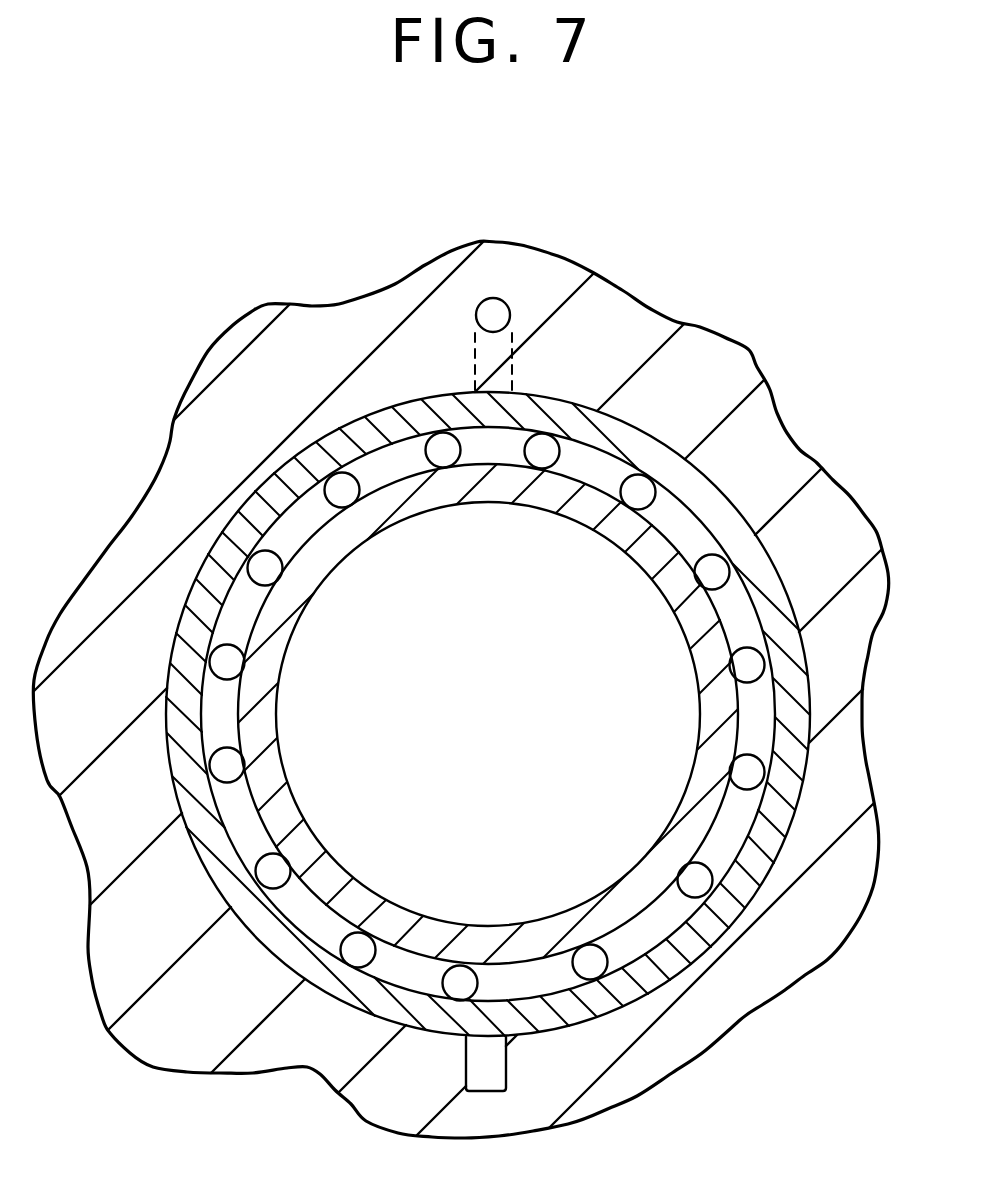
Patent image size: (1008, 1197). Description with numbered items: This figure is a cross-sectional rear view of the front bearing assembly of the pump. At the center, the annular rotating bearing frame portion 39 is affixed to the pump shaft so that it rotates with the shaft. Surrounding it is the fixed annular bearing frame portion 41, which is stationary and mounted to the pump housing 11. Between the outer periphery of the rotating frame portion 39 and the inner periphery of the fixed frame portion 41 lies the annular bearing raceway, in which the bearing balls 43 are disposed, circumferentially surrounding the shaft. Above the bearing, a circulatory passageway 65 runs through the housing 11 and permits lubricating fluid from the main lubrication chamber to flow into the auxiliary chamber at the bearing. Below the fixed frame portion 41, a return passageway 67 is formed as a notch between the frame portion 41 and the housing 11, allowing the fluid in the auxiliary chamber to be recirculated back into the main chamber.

The pump housing 11 is at (739, 378).
The rotating bearing frame portion 39 is at (322, 557).
The fixed annular bearing frame portion 41 is at (771, 581).
The bearing balls 43 is at (745, 662).
The circulatory passageway 65 is at (500, 311).
The return passageway 67 is at (496, 1067).